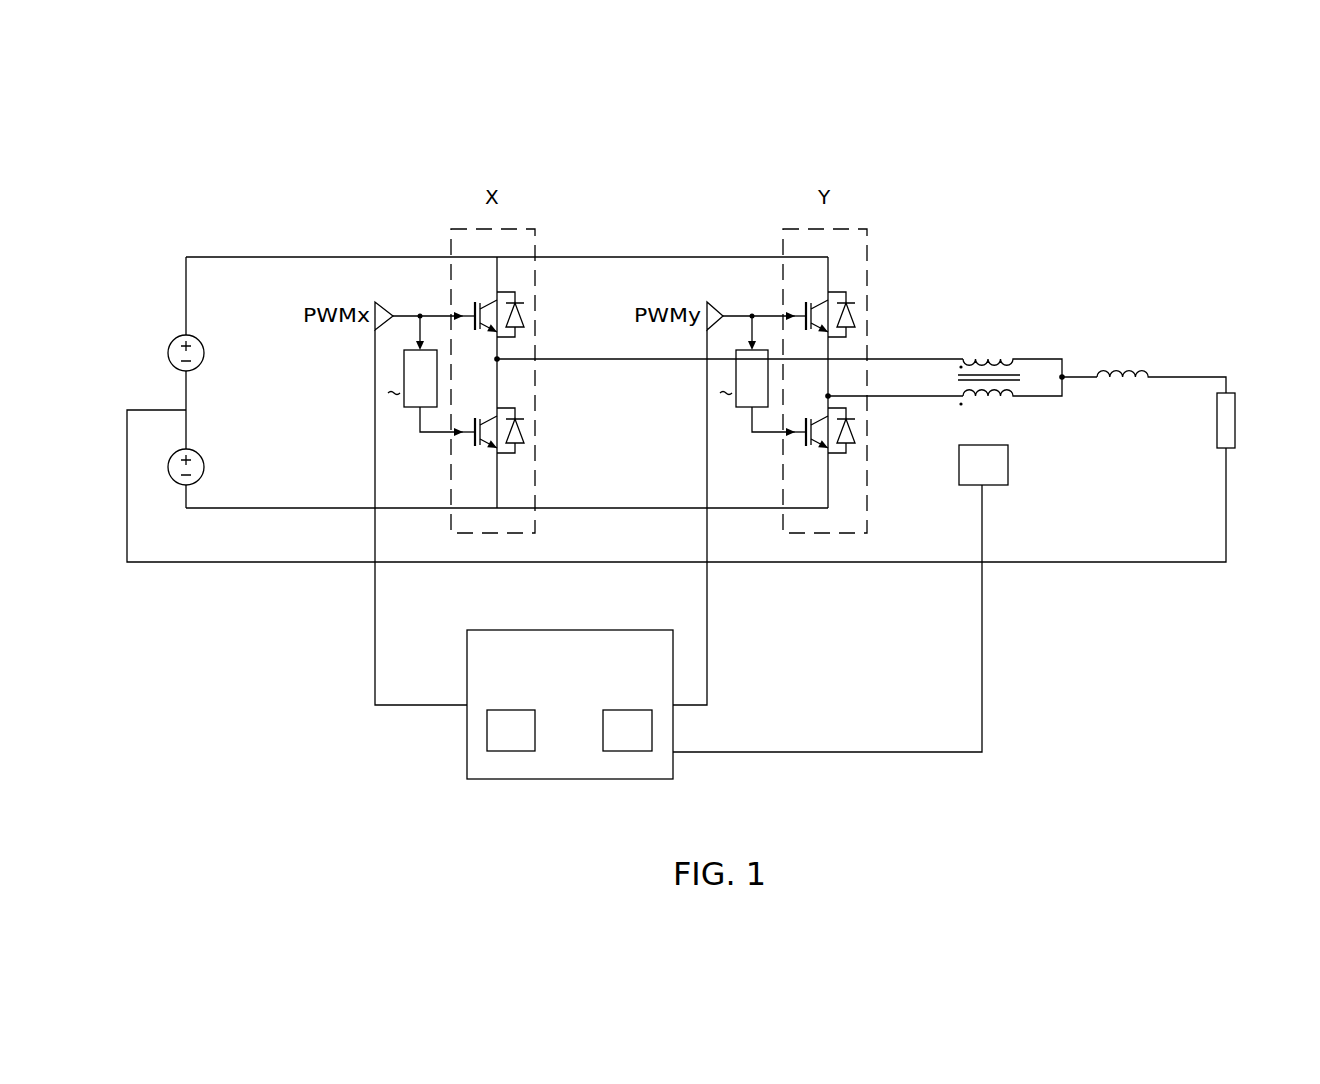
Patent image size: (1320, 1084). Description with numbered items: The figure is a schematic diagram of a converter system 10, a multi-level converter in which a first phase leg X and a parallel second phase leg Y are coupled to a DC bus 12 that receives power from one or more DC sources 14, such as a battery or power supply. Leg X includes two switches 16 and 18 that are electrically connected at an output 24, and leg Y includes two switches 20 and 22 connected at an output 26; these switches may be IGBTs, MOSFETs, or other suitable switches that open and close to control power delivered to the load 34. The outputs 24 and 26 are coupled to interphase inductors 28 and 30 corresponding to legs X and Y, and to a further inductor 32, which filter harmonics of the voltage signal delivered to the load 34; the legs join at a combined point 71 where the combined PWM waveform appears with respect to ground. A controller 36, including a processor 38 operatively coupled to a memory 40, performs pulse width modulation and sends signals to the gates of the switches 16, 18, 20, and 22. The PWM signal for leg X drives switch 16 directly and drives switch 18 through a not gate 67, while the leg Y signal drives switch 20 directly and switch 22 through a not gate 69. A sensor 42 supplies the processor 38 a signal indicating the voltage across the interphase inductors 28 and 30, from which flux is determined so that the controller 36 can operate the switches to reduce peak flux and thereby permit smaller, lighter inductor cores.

The converter system 10 is at (1003, 160).
The DC bus 12 is at (293, 257).
The DC source 14 is at (167, 353).
The first switch of first phase leg X 16 is at (470, 316).
The second switch of first phase leg X 18 is at (458, 437).
The first switch of second phase leg Y 20 is at (802, 316).
The second switch of second phase leg Y 22 is at (790, 437).
The output of first phase leg X 24 is at (500, 362).
The output of second phase leg Y 26 is at (832, 396).
The interphase inductor 28 is at (1012, 362).
The interphase inductor 30 is at (1008, 400).
The inductor 32 is at (1125, 378).
The load 34 is at (1236, 420).
The controller 36 is at (568, 630).
The processor 38 is at (510, 752).
The memory 40 is at (627, 752).
The sensor 42 is at (962, 470).
The not gate 67 is at (403, 378).
The not gate 69 is at (735, 378).
The combined point 71 is at (1064, 377).